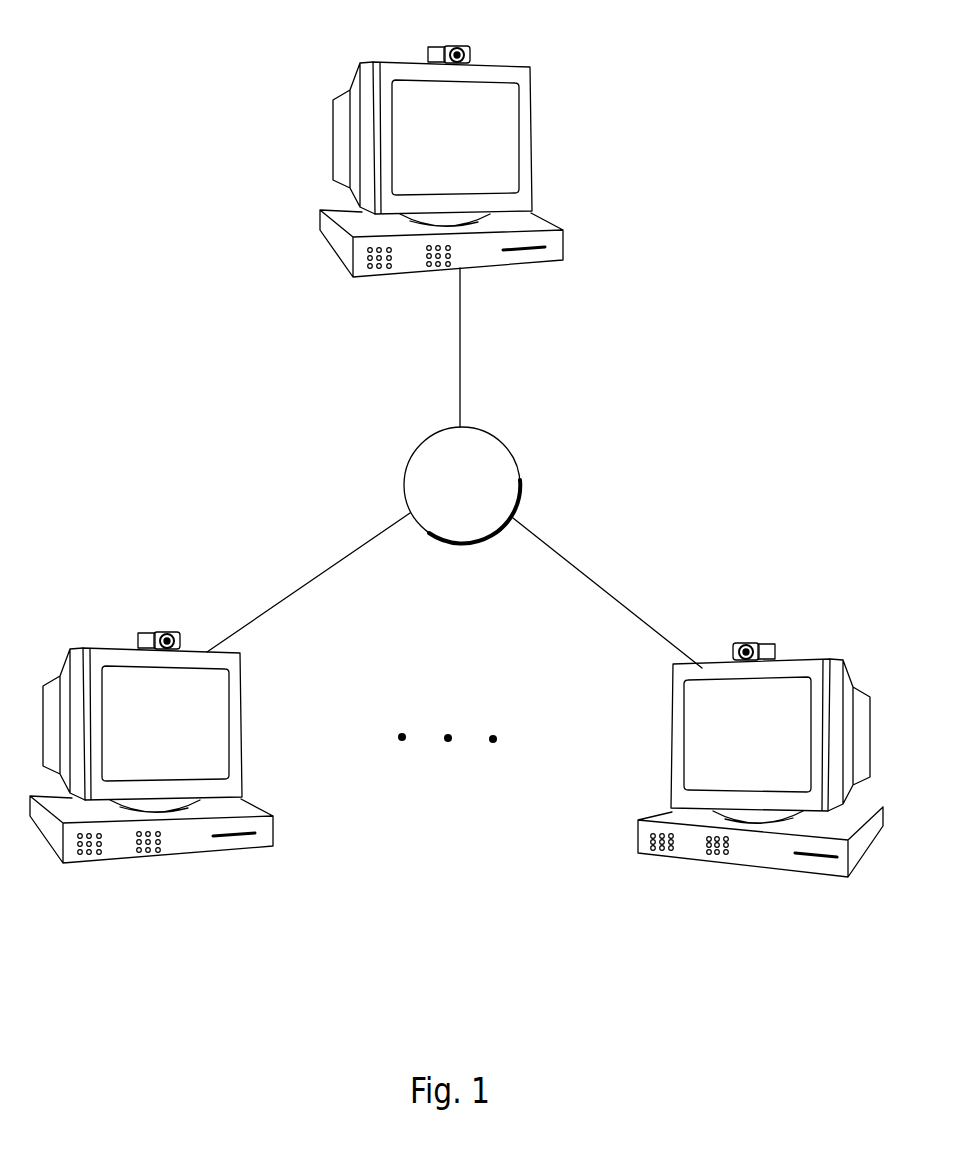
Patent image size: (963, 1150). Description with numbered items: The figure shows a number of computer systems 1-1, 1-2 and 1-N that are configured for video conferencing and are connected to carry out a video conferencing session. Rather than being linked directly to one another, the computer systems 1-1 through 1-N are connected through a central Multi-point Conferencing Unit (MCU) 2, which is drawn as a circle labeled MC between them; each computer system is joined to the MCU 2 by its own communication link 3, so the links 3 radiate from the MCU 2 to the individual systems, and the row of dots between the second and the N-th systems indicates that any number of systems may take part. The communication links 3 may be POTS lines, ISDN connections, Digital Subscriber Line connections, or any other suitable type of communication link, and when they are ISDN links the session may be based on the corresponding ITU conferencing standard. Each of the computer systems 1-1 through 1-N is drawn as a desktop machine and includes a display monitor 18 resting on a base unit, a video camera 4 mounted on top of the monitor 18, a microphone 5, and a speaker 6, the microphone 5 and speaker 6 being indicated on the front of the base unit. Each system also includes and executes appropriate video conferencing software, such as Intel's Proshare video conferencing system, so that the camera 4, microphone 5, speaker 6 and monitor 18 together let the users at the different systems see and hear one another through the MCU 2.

The computer system 1-1 is at (562, 52).
The computer system 1-2 is at (265, 654).
The computer system 1-N is at (837, 649).
The Multi-point Conferencing Unit (MCU) 2 is at (520, 482).
The communication link 3 is at (461, 346).
The video camera 4 is at (463, 46).
The microphone 5 is at (373, 269).
The speaker 6 is at (437, 266).
The display monitor 18 is at (531, 135).